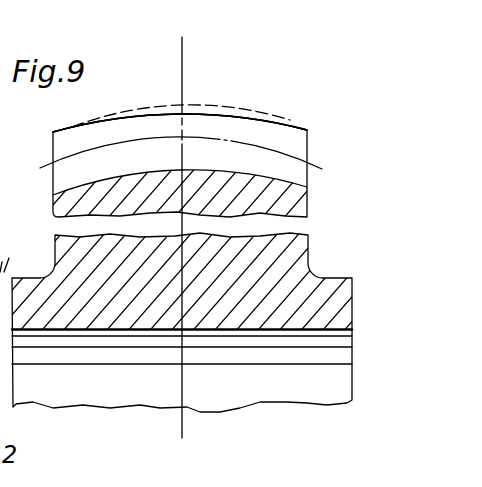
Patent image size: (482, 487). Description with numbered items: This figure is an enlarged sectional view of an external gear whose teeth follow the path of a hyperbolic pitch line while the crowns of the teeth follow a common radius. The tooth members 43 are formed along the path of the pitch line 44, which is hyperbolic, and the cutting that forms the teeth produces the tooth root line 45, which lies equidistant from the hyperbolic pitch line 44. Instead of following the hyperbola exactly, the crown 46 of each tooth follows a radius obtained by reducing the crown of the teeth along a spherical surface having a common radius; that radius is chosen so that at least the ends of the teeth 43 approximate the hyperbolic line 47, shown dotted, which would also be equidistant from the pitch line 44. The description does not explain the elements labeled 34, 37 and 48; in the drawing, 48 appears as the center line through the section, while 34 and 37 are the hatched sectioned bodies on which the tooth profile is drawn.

The piston body 34 is at (340, 295).
The insert 37 is at (298, 204).
The tooth members 43 is at (284, 135).
The pitch line 44 is at (322, 168).
The tooth root line 45 is at (123, 175).
The crown 46 is at (156, 115).
The hyperbolic line 47 is at (224, 107).
The center line 48 is at (183, 63).